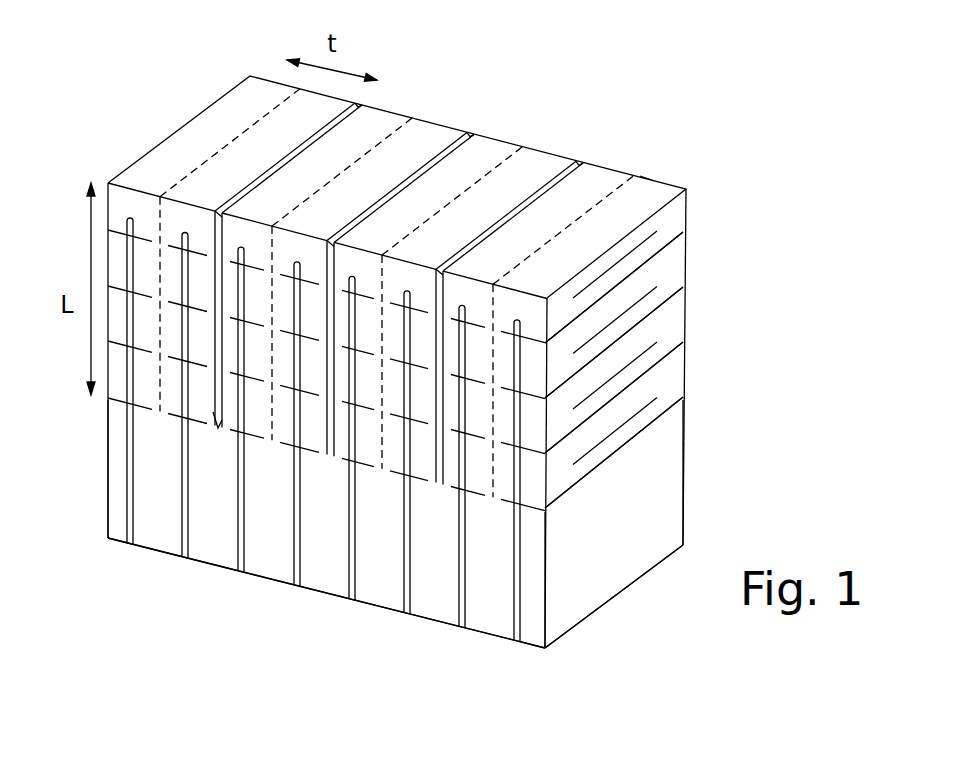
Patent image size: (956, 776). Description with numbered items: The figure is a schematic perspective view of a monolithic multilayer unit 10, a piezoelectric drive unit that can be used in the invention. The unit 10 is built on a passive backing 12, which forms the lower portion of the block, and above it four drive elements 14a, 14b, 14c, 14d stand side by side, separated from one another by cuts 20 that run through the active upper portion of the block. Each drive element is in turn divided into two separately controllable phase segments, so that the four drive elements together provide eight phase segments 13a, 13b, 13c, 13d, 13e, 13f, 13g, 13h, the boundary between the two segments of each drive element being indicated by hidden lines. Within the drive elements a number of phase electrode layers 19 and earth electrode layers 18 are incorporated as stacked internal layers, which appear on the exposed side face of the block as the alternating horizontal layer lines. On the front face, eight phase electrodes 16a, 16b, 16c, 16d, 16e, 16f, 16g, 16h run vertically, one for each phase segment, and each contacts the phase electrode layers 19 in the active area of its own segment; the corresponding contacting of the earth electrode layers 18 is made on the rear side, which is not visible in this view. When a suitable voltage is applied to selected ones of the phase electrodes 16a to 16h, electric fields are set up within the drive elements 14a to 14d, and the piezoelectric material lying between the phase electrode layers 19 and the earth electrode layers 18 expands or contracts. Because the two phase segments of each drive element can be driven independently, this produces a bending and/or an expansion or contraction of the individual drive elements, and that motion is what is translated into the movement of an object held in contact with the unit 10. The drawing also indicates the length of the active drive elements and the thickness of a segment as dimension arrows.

The monolithic multilayer unit 10 is at (749, 171).
The passive backing 12 is at (595, 597).
The earth electrode layers 18 is at (670, 268).
The phase electrode layers 19 is at (647, 428).
The cuts 20 is at (218, 428).
The phase segment 13a is at (147, 180).
The phase segment 13b is at (282, 123).
The phase segment 13c is at (388, 110).
The phase segment 13d is at (432, 128).
The phase segment 13e is at (505, 147).
The phase segment 13f is at (575, 160).
The phase segment 13g is at (592, 172).
The phase segment 13h is at (580, 258).
The drive element 14a is at (192, 120).
The drive element 14b is at (425, 120).
The drive element 14c is at (541, 163).
The drive element 14d is at (648, 180).
The phase electrode 16a is at (130, 546).
The phase electrode 16b is at (185, 560).
The phase electrode 16c is at (241, 574).
The phase electrode 16d is at (297, 588).
The phase electrode 16e is at (352, 602).
The phase electrode 16f is at (408, 616).
The phase electrode 16g is at (463, 630).
The phase electrode 16h is at (519, 644).